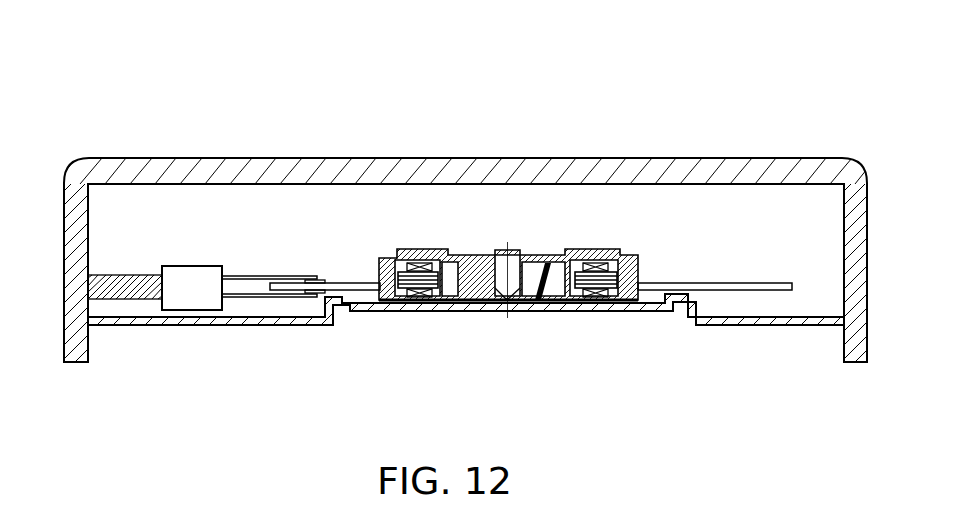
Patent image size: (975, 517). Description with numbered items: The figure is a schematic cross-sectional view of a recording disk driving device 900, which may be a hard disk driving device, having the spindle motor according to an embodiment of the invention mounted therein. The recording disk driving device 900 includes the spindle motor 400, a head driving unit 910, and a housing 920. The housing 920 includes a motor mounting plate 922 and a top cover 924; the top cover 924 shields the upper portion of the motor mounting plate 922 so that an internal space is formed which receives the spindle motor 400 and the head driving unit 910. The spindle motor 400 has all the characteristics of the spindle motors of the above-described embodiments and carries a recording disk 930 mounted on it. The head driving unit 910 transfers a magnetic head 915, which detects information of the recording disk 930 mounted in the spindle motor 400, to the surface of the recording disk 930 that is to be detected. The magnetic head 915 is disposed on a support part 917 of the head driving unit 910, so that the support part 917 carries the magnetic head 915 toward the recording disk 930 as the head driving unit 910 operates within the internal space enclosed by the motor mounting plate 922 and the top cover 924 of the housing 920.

The recording disk driving device 900 is at (131, 74).
The top cover 924 is at (316, 168).
The housing 920 is at (57, 347).
The motor mounting plate 922 is at (853, 352).
The head driving unit 910 is at (194, 312).
The support part 917 is at (262, 300).
The magnetic head 915 is at (333, 292).
The spindle motor 400 is at (544, 246).
The recording disk 930 is at (762, 292).